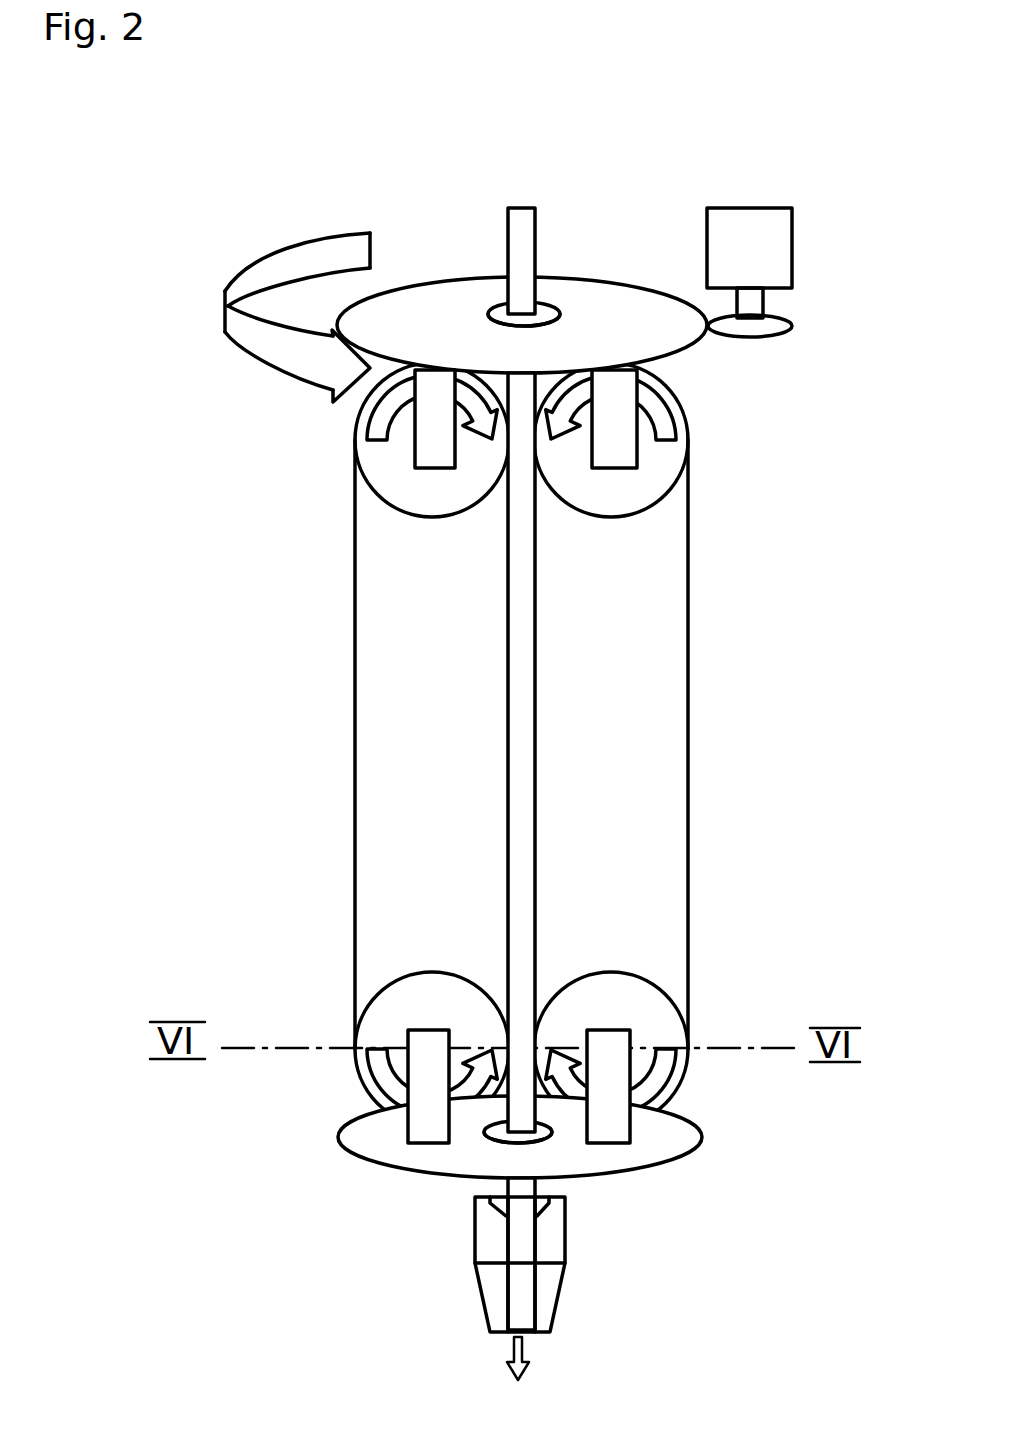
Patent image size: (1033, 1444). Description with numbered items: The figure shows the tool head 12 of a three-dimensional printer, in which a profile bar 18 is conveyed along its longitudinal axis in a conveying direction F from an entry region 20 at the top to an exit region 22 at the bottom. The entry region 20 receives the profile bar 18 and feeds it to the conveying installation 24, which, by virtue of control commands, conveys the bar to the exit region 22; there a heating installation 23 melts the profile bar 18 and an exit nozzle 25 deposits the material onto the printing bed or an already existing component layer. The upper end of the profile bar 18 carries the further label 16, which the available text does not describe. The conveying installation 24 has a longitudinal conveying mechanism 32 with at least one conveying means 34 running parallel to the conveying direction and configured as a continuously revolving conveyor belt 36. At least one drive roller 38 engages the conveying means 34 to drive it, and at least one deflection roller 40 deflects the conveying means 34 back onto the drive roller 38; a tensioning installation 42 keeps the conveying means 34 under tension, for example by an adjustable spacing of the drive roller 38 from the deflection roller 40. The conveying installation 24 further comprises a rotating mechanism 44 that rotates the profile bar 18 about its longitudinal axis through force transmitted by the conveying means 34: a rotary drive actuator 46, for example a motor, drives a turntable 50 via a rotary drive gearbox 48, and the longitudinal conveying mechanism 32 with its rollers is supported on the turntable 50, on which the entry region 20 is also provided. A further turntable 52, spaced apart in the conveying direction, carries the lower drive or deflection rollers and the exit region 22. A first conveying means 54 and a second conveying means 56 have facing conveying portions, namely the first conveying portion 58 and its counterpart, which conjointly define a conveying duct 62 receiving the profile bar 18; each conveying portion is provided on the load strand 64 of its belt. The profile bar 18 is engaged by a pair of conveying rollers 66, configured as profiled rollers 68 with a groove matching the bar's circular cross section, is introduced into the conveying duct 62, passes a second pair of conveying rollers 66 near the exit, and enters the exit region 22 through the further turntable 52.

The conveying device 12 is at (208, 188).
The drive end of shaft 16 is at (516, 220).
The profile bar 18 is at (540, 232).
The entry region 20 is at (480, 246).
The exit region 22 is at (499, 1286).
The heating installation 23 is at (555, 1238).
The conveying installation 24 is at (209, 248).
The exit nozzle 25 is at (545, 1302).
The longitudinal conveying mechanism 32 is at (272, 473).
The conveying means 34 is at (508, 580).
The conveyor belt 36 is at (508, 655).
The drive roller 38 is at (430, 990).
The deflection roller 40 is at (380, 462).
The tensioning installation 42 is at (433, 412).
The rotating mechanism 44 is at (715, 216).
The rotary drive actuator 46 is at (766, 218).
The rotary drive gearbox 48 is at (682, 268).
The turntable 50 is at (604, 300).
The further turntable 52 is at (682, 1142).
The first conveying means 54 is at (508, 762).
The second conveying means 56 is at (576, 735).
The first conveying portion 58 is at (508, 835).
The conveying duct 62 is at (540, 897).
The load strand 64 is at (540, 547).
The conveying rollers 66 is at (430, 505).
The profiled rollers 68 is at (665, 1037).